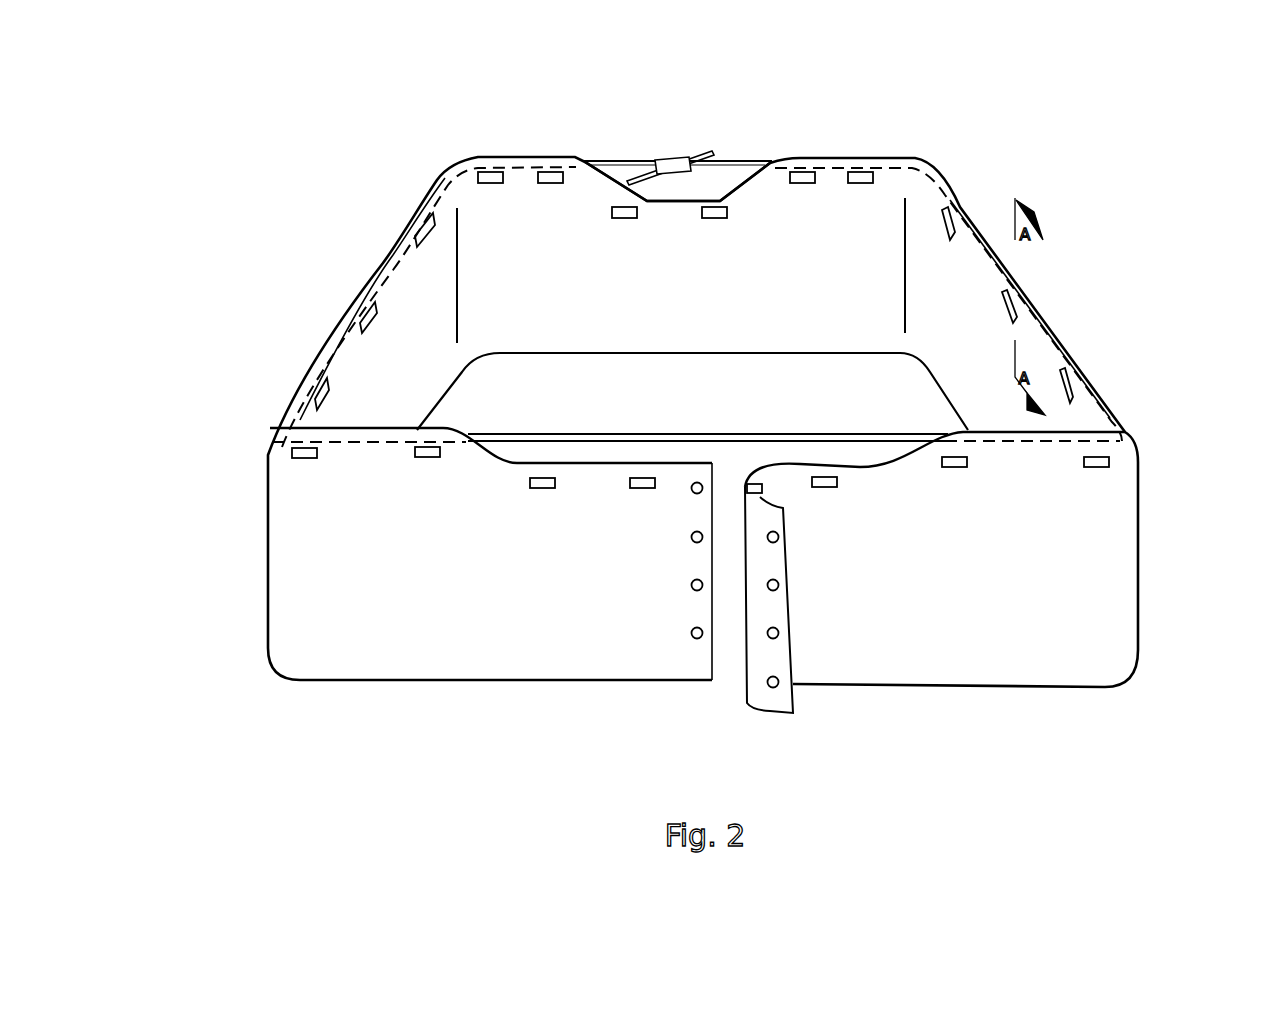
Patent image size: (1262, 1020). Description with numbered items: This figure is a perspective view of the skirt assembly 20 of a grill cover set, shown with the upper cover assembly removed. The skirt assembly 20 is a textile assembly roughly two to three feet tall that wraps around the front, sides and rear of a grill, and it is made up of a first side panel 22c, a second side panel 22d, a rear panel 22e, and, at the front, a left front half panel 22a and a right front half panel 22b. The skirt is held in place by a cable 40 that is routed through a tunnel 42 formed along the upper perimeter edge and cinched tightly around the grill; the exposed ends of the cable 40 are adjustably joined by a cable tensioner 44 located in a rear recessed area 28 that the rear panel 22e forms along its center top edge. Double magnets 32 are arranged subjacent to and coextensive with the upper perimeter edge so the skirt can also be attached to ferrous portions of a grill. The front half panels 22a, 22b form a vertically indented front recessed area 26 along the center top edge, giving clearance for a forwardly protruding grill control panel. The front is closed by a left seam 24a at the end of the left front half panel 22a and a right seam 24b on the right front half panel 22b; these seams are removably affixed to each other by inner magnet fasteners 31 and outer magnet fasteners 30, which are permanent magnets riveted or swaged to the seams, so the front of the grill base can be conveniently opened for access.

The skirt assembly 20 is at (289, 282).
The left front half panel 22a is at (415, 613).
The right front half panel 22b is at (1050, 655).
The first side panel 22c is at (437, 273).
The second side panel 22d is at (950, 297).
The rear panel 22e is at (817, 250).
The left seam 24a is at (708, 657).
The right seam 24b is at (793, 682).
The front recessed area 26 is at (597, 462).
The rear recessed area 28 is at (705, 160).
The outer magnet fasteners 30 is at (786, 684).
The inner magnet fasteners 31 is at (690, 638).
The double magnets 32 is at (615, 203).
The cable 40 is at (628, 170).
The tunnel 42 is at (430, 210).
The cable tensioner 44 is at (672, 162).